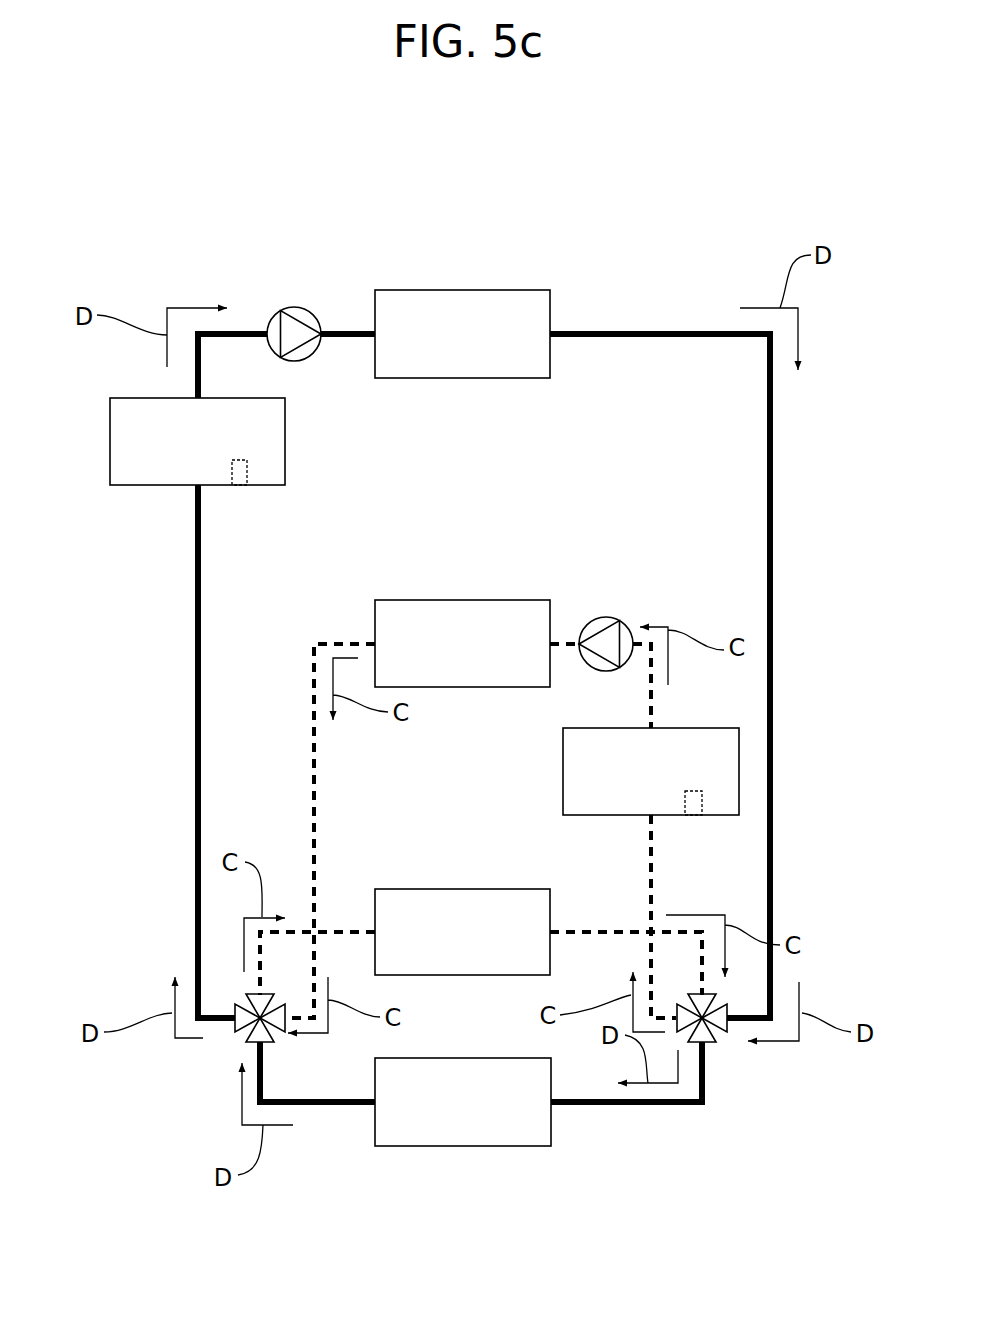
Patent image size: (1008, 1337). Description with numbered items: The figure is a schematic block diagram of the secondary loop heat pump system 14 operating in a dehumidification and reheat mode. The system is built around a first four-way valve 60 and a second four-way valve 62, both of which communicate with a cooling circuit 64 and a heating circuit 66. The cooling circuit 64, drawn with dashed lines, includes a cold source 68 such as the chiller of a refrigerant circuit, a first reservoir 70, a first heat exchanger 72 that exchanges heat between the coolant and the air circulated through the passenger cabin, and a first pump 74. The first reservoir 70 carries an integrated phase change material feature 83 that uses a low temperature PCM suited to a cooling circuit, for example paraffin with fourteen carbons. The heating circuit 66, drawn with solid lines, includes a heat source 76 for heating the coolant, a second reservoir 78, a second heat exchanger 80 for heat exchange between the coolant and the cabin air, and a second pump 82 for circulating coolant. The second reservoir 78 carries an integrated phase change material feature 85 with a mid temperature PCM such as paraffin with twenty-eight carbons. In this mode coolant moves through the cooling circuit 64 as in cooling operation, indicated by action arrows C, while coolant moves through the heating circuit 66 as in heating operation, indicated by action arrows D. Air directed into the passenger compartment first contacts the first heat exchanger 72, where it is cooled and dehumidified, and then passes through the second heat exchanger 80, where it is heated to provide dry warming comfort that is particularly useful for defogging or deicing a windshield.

The secondary loop heat pump system 14 is at (674, 250).
The first four-way valve 60 is at (237, 1032).
The second four-way valve 62 is at (718, 1032).
The cooling circuit 64 is at (716, 696).
The heating circuit 66 is at (141, 526).
The cold source 68 is at (477, 600).
The first reservoir 70 is at (563, 771).
The first heat exchanger 72 is at (437, 889).
The first pump 74 is at (610, 618).
The heat source 76 is at (505, 290).
The second reservoir 78 is at (285, 452).
The second heat exchanger 80 is at (485, 1146).
The second pump 82 is at (288, 308).
The integrated phase change material feature 83 is at (702, 793).
The integrated phase change material feature 85 is at (257, 480).